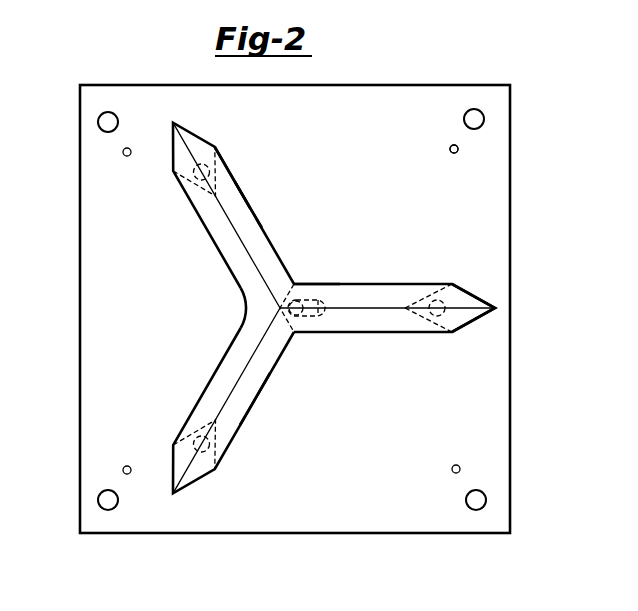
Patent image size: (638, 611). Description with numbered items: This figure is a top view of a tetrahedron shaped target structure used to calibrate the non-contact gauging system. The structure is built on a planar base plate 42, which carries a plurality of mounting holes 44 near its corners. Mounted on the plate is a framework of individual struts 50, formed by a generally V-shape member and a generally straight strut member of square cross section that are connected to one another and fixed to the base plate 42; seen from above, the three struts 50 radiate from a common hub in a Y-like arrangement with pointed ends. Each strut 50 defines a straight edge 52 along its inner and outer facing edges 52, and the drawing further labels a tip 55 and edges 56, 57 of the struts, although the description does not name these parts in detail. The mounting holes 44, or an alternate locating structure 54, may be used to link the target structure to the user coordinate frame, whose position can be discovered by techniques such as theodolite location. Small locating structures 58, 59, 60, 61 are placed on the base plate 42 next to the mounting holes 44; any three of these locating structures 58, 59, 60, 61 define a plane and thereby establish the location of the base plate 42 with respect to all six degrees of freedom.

The base plate 42 is at (277, 500).
The mounting hole 44 is at (486, 500).
The strut 50 is at (257, 238).
The straight edge 52 is at (236, 176).
The locating structure 54 is at (452, 145).
The blade tip 55 is at (392, 308).
The blade edge 56 is at (257, 403).
The blade edge 57 is at (247, 195).
The locating structure 58 is at (454, 154).
The locating structure 59 is at (456, 465).
The locating structure 60 is at (127, 466).
The locating structure 61 is at (128, 157).